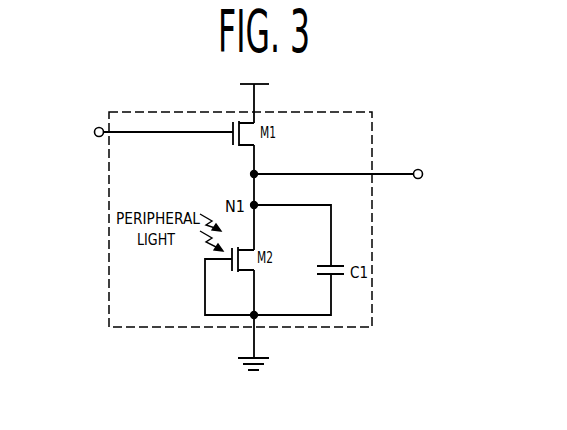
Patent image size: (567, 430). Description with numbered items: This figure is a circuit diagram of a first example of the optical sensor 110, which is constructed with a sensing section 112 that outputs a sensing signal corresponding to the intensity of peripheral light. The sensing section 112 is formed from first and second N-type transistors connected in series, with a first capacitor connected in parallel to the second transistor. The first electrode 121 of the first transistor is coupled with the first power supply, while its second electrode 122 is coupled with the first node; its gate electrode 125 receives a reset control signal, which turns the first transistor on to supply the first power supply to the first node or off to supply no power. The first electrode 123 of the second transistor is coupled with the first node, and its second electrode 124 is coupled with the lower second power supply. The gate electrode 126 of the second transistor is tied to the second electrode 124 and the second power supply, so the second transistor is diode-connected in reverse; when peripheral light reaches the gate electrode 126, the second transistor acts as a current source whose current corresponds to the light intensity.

The optical sensor 110 is at (453, 126).
The sensing section 112 is at (352, 112).
The first electrode of first transistor 121 is at (256, 104).
The second electrode of first transistor 122 is at (256, 166).
The first electrode of second transistor 123 is at (256, 232).
The second electrode of second transistor 124 is at (256, 292).
The gate electrode of first transistor 125 is at (170, 134).
The gate electrode of second transistor 126 is at (204, 287).